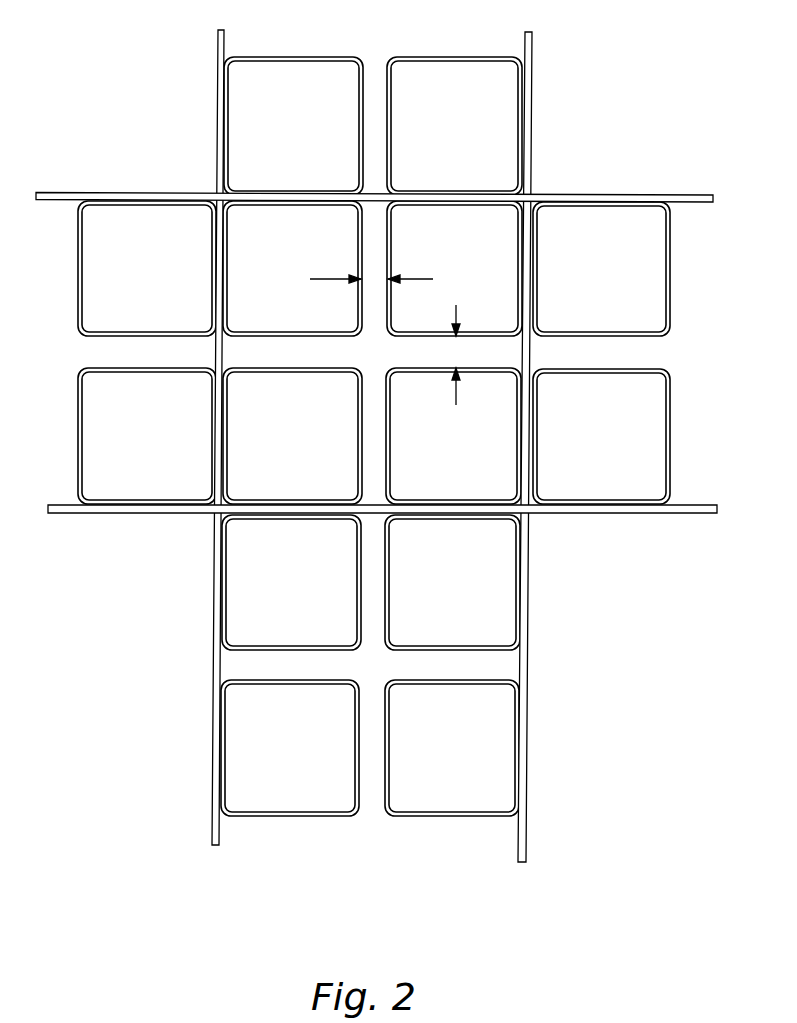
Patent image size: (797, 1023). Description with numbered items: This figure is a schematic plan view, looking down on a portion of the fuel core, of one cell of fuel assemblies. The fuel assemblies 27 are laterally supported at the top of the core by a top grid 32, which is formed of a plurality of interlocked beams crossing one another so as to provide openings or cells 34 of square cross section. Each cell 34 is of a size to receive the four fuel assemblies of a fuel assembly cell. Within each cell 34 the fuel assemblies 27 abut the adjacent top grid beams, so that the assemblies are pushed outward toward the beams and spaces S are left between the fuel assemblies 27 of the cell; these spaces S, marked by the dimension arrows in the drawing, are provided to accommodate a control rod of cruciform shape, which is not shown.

The fuel assembly 27 is at (220, 203).
The top grid 32 is at (548, 179).
The cell 34 is at (388, 363).